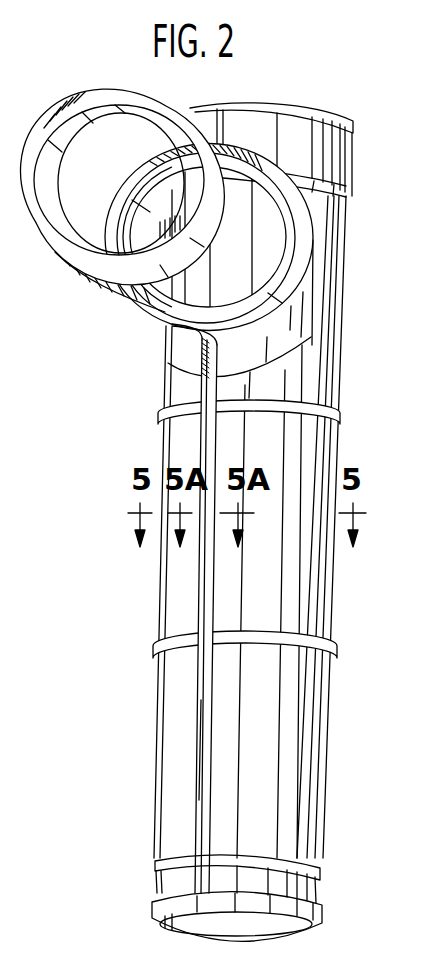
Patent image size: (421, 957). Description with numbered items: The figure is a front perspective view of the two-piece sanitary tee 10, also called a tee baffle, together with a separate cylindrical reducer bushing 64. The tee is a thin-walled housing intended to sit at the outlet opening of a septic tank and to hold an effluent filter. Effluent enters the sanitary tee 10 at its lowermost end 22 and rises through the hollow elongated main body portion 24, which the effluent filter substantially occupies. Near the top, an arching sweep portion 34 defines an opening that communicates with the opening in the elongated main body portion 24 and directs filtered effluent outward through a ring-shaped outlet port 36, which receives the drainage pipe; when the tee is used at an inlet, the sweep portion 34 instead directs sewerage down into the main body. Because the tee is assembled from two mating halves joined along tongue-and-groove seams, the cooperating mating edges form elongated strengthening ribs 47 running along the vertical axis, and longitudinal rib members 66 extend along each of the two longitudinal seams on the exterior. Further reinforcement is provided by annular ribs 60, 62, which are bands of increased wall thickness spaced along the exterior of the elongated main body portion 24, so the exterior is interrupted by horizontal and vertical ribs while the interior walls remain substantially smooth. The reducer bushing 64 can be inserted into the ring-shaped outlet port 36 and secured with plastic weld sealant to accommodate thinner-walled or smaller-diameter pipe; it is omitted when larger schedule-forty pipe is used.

The sanitary tee 10 is at (342, 407).
The lowermost end 22 is at (277, 928).
The elongated main body portion 24 is at (300, 612).
The arching sweep portion 34 is at (308, 258).
The ring-shaped outlet port 36 is at (268, 310).
The elongated strengthening rib 47 is at (213, 608).
The annular rib 60 is at (175, 633).
The annular rib 62 is at (173, 400).
The reducer bushing 64 is at (63, 256).
The longitudinal rib member 66 is at (197, 743).